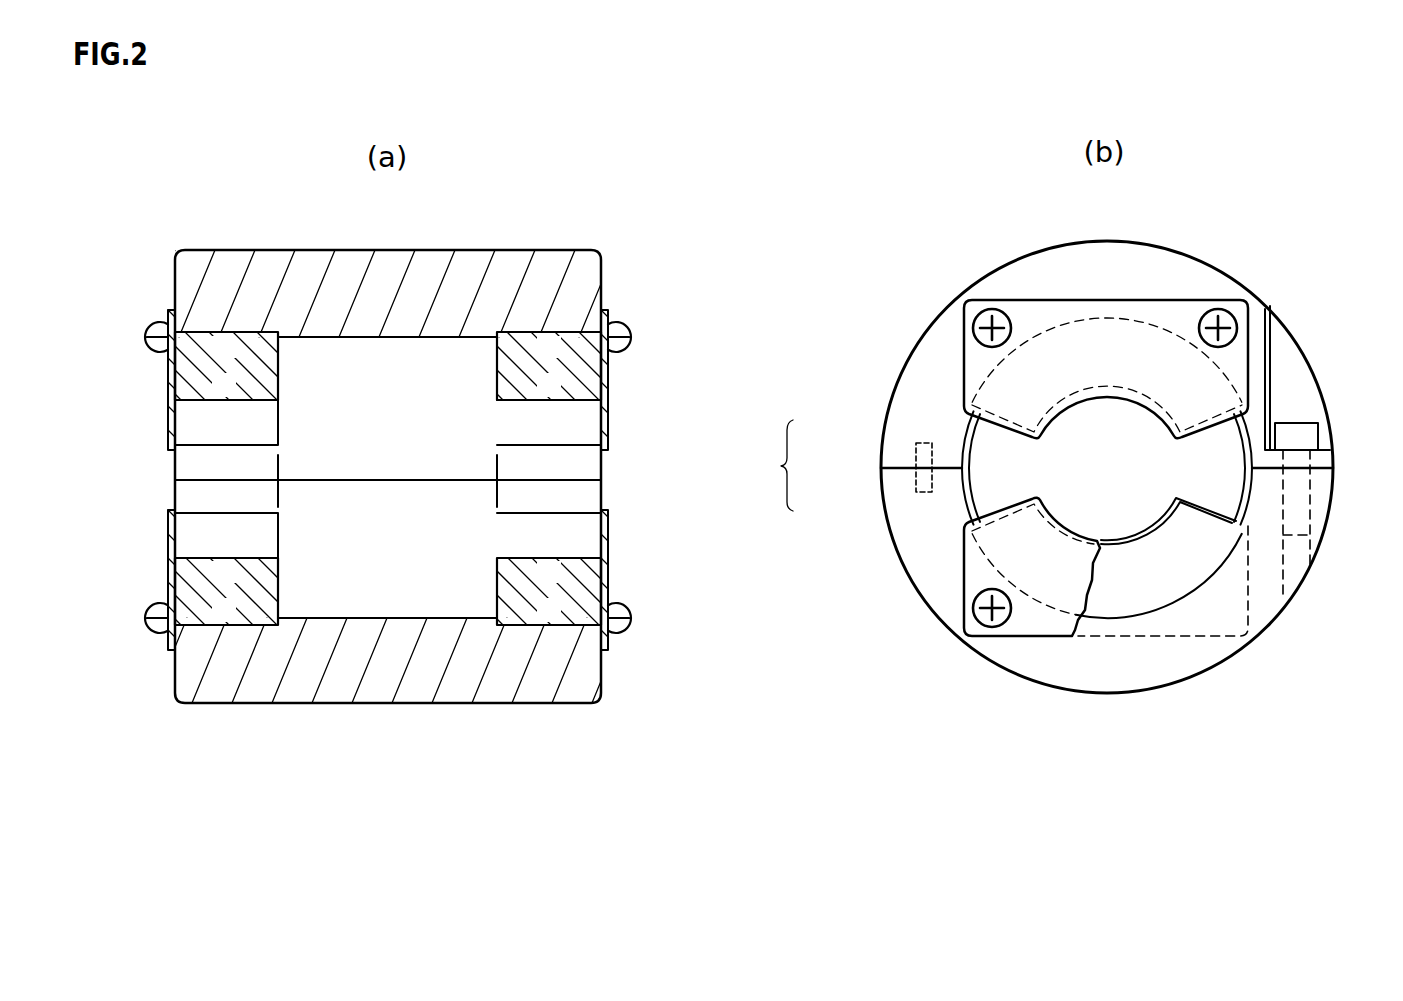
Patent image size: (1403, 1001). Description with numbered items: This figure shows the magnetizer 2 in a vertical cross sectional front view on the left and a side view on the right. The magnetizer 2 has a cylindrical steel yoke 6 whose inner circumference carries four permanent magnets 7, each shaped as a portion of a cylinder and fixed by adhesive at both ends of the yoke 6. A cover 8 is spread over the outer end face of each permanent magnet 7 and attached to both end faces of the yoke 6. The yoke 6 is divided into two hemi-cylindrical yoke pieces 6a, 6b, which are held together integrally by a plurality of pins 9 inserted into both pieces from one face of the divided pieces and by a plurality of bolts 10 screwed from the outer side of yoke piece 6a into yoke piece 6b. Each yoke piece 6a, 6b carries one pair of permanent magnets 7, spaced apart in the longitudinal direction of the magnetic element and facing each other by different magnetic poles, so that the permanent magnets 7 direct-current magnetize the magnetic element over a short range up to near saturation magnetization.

The magnetizer 2 is at (173, 248).
The yoke 6 is at (776, 465).
The yoke piece 6a is at (448, 278).
The yoke piece 6b is at (392, 675).
The permanent magnet 7 is at (253, 347).
The cover 8 is at (170, 380).
The pin 9 is at (922, 494).
The bolt 10 is at (1300, 430).